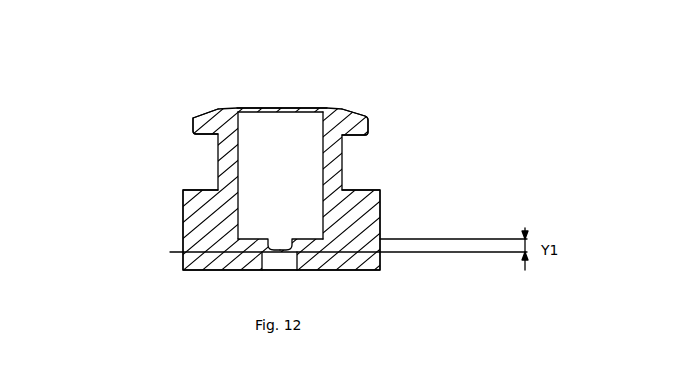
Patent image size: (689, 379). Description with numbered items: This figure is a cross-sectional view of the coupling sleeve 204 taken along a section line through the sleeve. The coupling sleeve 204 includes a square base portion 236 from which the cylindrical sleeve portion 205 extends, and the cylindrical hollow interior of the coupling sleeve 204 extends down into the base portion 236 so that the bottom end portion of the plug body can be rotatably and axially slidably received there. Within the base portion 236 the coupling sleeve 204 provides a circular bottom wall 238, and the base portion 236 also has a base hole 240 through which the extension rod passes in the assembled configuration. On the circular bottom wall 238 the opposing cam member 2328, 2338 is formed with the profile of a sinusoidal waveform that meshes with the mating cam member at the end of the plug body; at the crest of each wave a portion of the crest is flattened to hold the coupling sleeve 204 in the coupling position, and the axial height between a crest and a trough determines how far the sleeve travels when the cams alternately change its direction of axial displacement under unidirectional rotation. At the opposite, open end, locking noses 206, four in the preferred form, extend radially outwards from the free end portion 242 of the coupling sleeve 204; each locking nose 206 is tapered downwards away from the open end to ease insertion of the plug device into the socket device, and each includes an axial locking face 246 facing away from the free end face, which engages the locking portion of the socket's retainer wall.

The coupling sleeve 204 is at (369, 96).
The free end portion 242 is at (276, 106).
The locking nose 206 is at (367, 112).
The axial locking face 246 is at (198, 138).
The cylindrical sleeve portion 205 is at (342, 156).
The base portion 236 is at (380, 195).
The opposing cam member 2328 is at (266, 247).
The opposing cam member 2338 is at (305, 239).
The circular bottom wall 238 is at (262, 243).
The base hole 240 is at (281, 259).